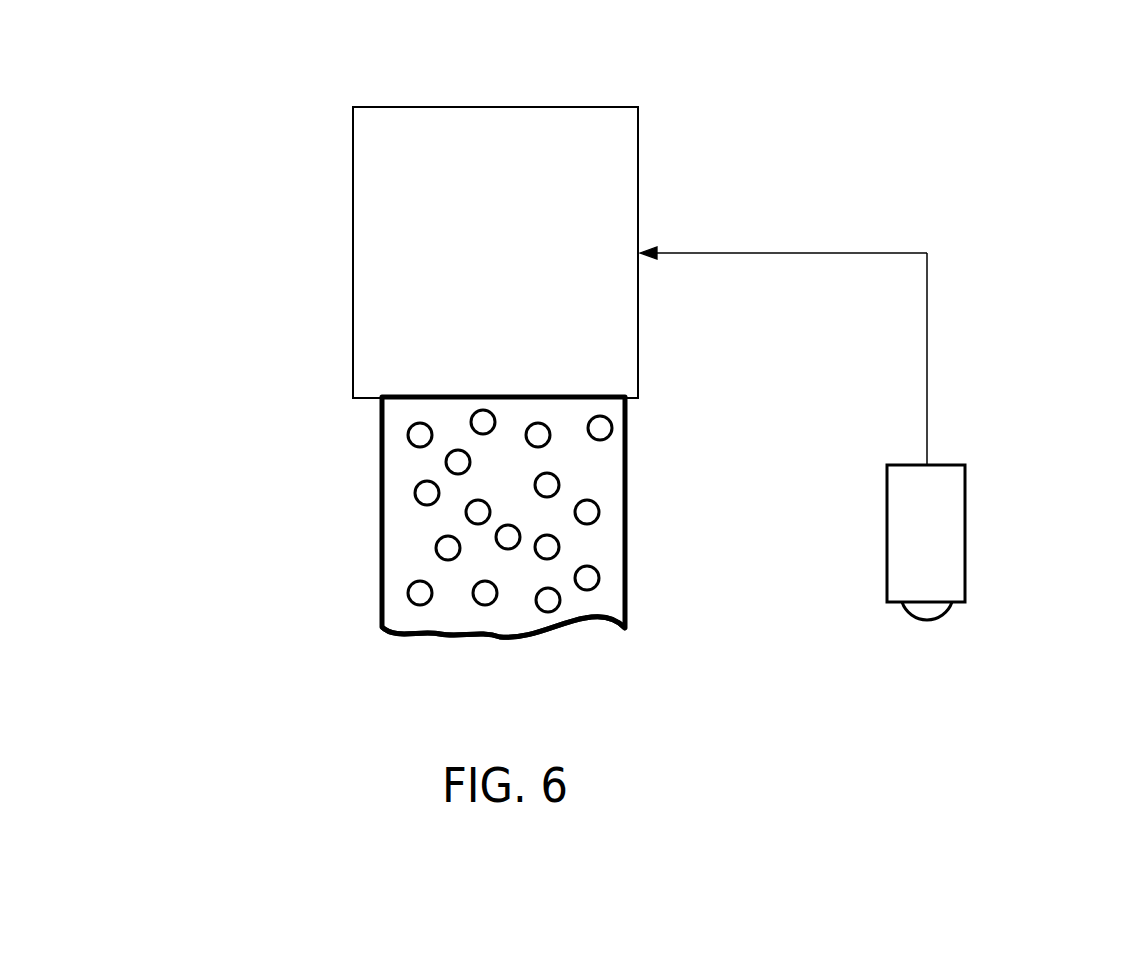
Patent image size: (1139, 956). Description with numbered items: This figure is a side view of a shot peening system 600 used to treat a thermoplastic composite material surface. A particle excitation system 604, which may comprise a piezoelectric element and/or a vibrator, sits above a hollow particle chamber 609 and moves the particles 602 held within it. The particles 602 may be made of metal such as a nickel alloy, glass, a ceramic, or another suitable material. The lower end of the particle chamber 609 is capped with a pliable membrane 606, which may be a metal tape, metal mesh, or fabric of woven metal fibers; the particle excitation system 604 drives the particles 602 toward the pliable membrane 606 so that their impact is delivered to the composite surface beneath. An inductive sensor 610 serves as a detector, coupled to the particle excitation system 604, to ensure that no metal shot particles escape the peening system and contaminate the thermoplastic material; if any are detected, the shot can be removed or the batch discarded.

The shot peening system 600 is at (268, 139).
The particles 602 is at (408, 435).
The particle excitation system 604 is at (473, 322).
The pliable membrane 606 is at (497, 637).
The particle chamber 609 is at (627, 550).
The inductive sensor 610 is at (950, 520).